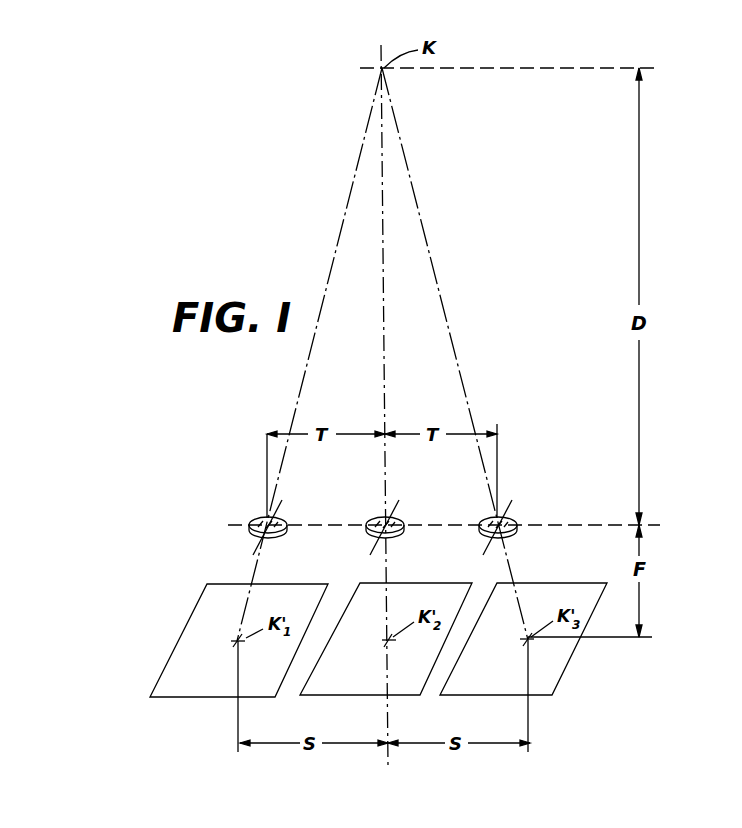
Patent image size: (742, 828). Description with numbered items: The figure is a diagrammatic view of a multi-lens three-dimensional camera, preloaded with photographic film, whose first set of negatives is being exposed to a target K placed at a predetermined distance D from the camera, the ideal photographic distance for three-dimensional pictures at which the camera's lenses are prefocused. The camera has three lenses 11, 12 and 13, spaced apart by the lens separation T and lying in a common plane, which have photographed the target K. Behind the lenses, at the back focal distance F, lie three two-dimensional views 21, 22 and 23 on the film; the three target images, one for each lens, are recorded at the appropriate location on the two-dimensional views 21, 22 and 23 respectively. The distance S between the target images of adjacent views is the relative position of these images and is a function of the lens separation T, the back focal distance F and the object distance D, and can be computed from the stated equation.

The camera lens 11 is at (276, 522).
The camera lens 12 is at (394, 520).
The camera lens 13 is at (506, 520).
The 2-D view 21 is at (204, 591).
The 2-D view 22 is at (360, 583).
The 2-D view 23 is at (545, 588).